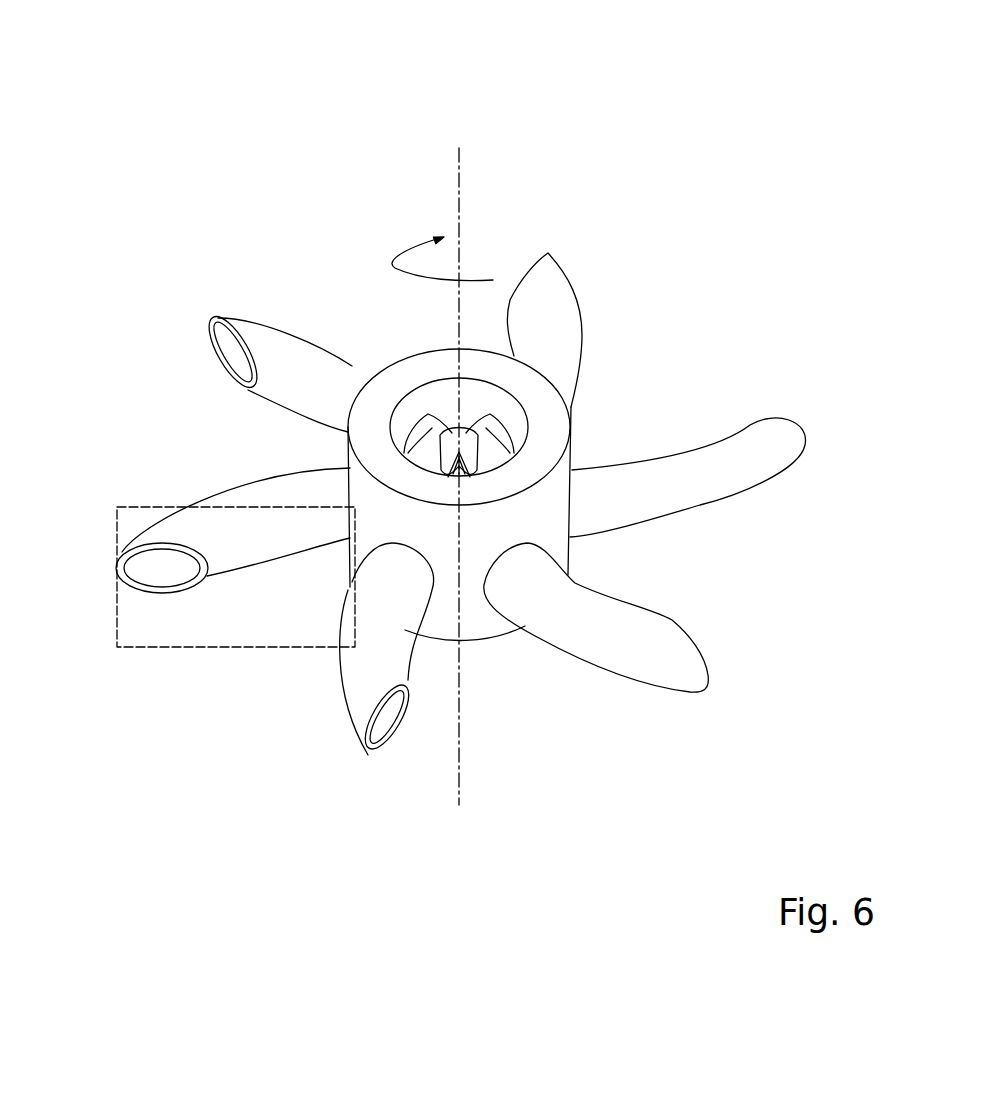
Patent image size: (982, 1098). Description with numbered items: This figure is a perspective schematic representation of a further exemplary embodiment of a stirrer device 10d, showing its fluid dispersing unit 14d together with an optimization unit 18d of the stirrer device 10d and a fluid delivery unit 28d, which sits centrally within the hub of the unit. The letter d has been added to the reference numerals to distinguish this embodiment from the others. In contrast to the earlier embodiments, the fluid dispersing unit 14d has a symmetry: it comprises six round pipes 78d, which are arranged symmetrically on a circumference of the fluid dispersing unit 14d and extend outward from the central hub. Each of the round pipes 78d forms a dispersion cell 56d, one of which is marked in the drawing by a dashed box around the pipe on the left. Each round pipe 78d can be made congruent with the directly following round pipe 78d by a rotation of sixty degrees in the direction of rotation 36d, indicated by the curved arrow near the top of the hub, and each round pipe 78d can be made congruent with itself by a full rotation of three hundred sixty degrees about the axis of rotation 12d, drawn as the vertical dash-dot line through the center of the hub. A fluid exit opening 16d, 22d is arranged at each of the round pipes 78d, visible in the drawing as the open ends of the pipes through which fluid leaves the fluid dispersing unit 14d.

The stirrer device 10d is at (133, 140).
The axis of rotation 12d is at (458, 196).
The fluid dispersing unit 14d is at (193, 258).
The fluid exit opening 16d is at (158, 570).
The optimization unit 18d is at (163, 482).
The fluid exit opening 22d is at (230, 353).
The fluid delivery unit 28d is at (483, 398).
The direction of rotation 36d is at (388, 262).
The dispersion cell 56d is at (143, 655).
The round pipe 78d is at (280, 527).